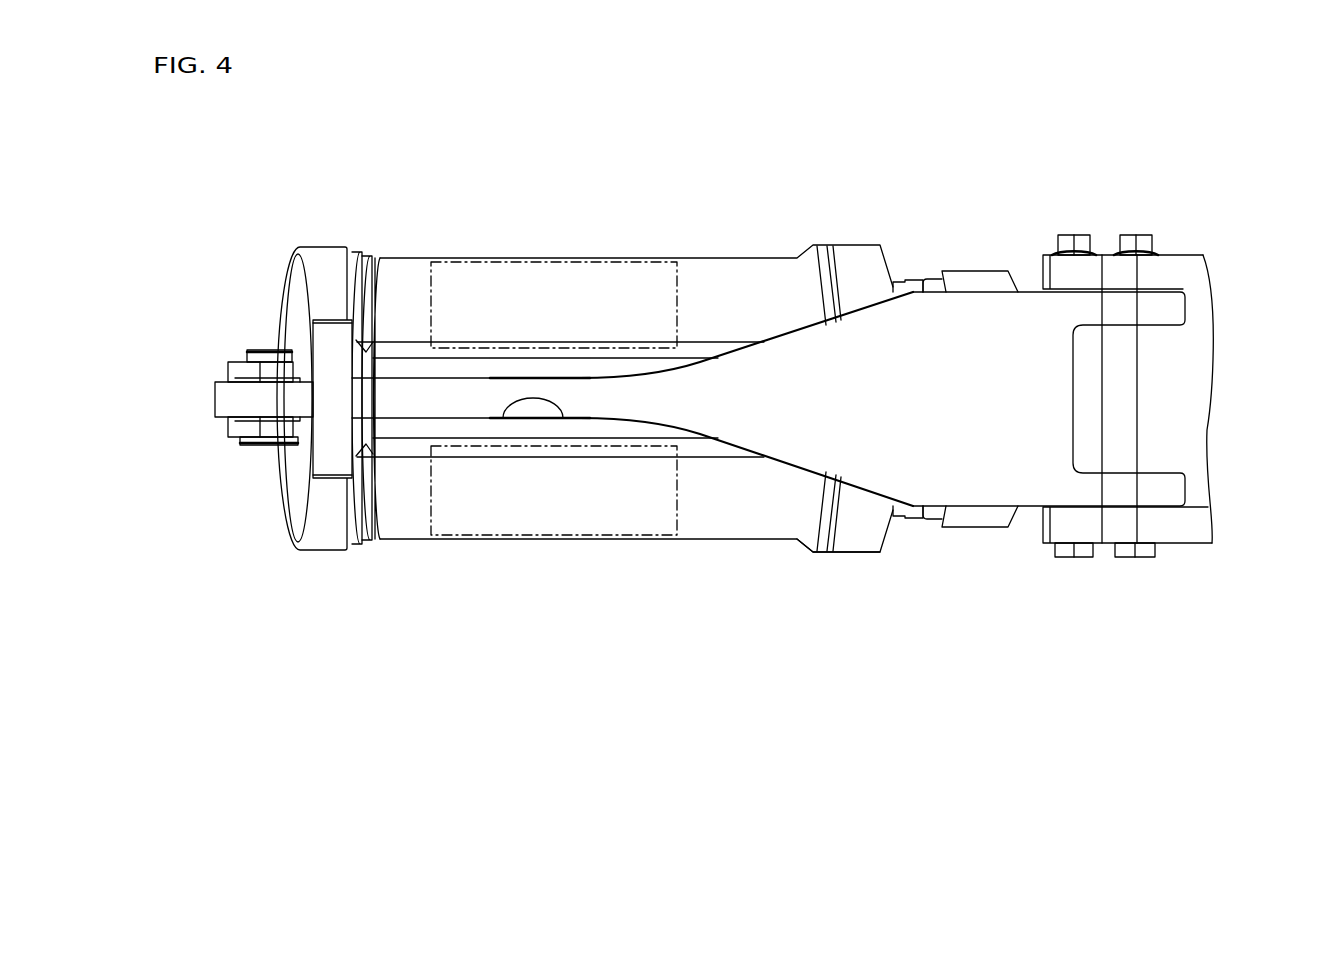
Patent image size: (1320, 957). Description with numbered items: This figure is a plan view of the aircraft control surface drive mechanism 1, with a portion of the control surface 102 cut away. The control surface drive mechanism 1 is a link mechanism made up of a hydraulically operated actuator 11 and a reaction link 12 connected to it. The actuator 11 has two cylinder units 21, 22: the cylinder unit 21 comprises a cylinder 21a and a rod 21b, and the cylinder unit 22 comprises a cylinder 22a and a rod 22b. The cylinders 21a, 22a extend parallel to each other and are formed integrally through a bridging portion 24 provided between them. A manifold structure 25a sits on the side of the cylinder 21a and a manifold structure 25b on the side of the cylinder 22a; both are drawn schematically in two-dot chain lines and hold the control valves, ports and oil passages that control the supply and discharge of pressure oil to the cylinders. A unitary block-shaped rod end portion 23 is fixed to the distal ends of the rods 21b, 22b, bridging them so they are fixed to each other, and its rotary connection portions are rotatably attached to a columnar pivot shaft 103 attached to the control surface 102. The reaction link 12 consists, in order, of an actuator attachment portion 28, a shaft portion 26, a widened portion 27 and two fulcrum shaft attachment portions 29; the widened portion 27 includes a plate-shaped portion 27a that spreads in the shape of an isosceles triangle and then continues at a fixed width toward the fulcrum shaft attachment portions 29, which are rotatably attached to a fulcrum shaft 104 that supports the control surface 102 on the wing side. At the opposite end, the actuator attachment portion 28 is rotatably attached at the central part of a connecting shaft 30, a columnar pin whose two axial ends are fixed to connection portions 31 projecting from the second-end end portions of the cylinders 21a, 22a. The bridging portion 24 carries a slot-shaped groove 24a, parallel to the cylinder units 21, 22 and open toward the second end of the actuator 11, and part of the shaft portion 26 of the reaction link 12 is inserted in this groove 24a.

The control surface drive mechanism 1 is at (262, 210).
The actuator 11 is at (740, 253).
The reaction link 12 is at (783, 467).
The cylinder unit 21 is at (615, 575).
The cylinder 21a is at (407, 510).
The rod 21b is at (910, 513).
The cylinder unit 22 is at (657, 229).
The cylinder 22a is at (402, 273).
The rod 22b is at (903, 278).
The rod end portion 23 is at (982, 272).
The bridging portion 24 is at (615, 363).
The groove 24a is at (510, 412).
The manifold structure 25a is at (677, 497).
The manifold structure 25b is at (535, 258).
The shaft portion 26 is at (450, 403).
The widened portion 27 is at (806, 597).
The plate-shaped portion 27a is at (837, 447).
The actuator attachment portion 28 is at (228, 398).
The fulcrum shaft attachment portion 29 is at (1168, 307).
The connecting shaft 30 is at (262, 350).
The connection portion 31 is at (242, 368).
The control surface 102 is at (1190, 413).
The pivot shaft 103 is at (1067, 558).
The fulcrum shaft 104 is at (1142, 558).